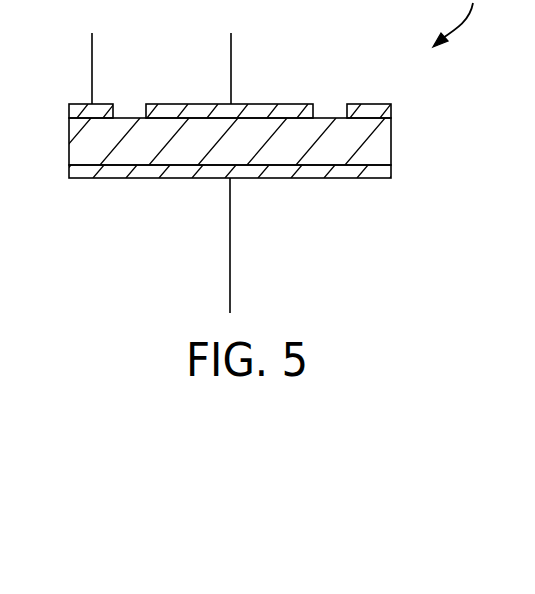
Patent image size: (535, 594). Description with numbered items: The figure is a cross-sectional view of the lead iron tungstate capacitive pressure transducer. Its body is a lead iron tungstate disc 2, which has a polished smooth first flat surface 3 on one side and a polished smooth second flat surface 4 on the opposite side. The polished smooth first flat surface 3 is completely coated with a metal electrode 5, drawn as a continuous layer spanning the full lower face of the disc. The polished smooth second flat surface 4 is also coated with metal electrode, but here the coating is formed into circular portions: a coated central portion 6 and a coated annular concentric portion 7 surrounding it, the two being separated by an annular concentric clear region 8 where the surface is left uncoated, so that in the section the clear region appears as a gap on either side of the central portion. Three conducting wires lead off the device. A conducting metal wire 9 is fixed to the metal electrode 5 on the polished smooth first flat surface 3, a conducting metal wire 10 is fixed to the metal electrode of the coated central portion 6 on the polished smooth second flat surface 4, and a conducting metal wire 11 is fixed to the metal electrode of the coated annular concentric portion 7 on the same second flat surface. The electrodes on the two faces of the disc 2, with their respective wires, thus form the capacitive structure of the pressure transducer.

The lead iron tungstate disc 2 is at (392, 140).
The polished smooth first flat surface 3 is at (392, 165).
The polished smooth second flat surface 4 is at (230, 93).
The metal electrode 5 is at (375, 178).
The central portion 6 is at (277, 102).
The coated annular concentric portion 7 is at (370, 102).
The annular concentric clear region 8 is at (130, 110).
The conducting metal wire 9 is at (230, 240).
The conducting metal wire 10 is at (231, 53).
The conducting metal wire 11 is at (92, 53).